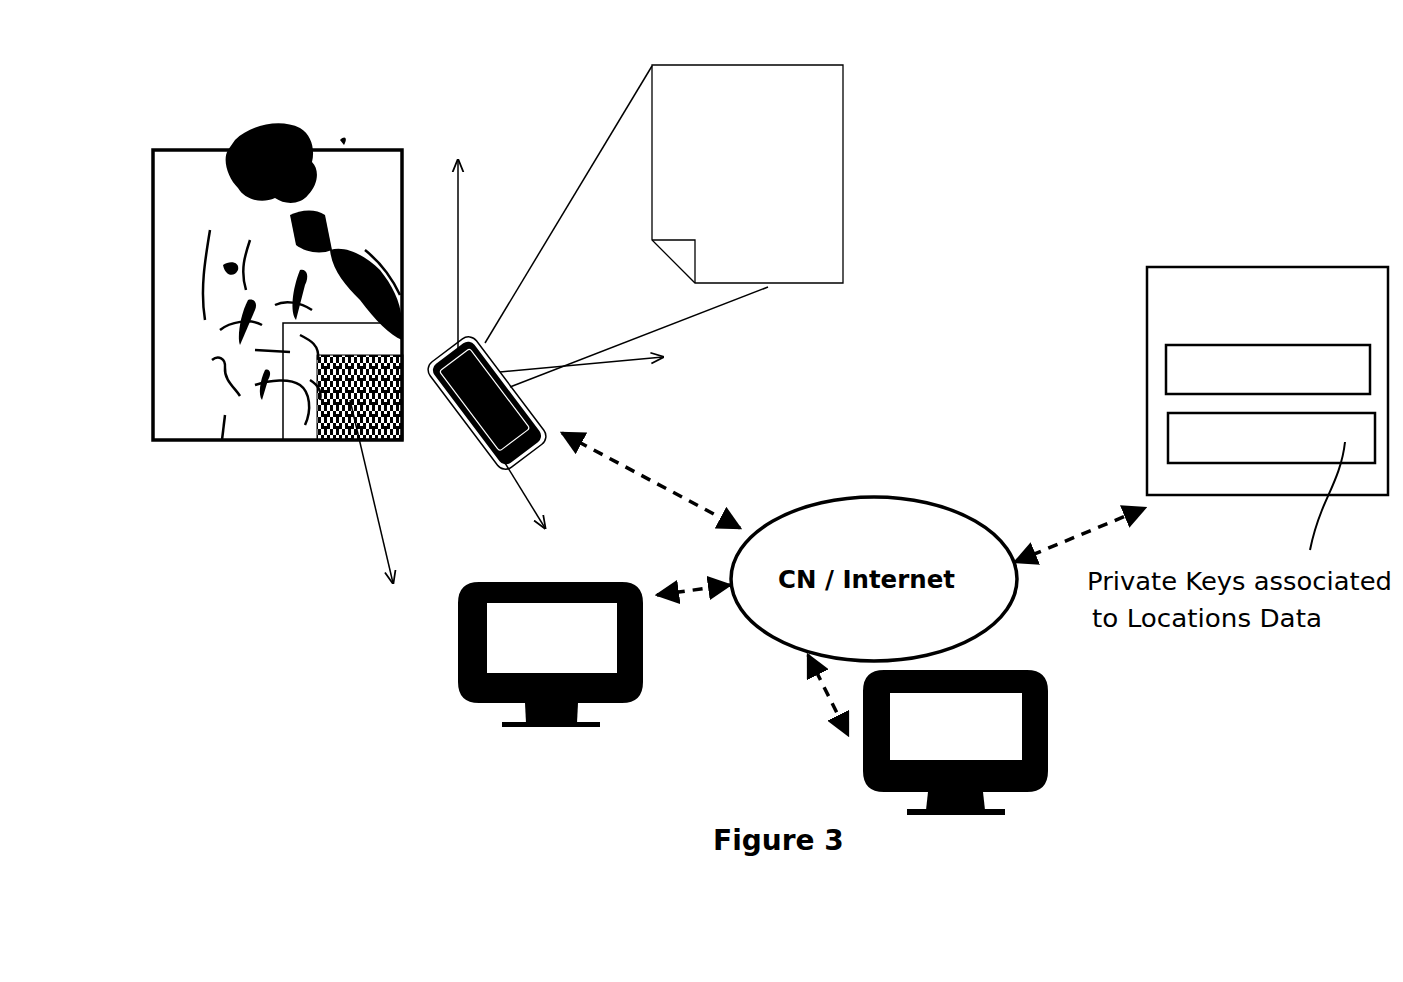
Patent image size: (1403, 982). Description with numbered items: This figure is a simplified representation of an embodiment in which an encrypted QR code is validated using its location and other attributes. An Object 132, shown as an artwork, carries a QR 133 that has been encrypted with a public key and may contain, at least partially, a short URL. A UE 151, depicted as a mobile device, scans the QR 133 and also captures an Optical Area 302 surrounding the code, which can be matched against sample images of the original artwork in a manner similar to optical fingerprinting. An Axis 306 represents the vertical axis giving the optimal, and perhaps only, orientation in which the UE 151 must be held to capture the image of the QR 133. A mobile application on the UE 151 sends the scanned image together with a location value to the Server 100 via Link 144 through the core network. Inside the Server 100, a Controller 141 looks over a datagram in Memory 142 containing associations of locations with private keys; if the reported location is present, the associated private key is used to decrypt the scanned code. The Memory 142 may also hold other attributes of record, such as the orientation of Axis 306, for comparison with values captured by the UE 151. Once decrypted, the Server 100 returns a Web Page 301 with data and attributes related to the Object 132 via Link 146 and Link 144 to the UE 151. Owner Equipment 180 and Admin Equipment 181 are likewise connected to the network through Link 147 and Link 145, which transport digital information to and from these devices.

The Server 100 is at (1200, 270).
The Object 132 is at (348, 150).
The QR 133 is at (338, 440).
The Controller 141 is at (1166, 364).
The Memory 142 is at (1168, 437).
The Link 144 is at (645, 465).
The Link 145 is at (840, 715).
The Link 146 is at (1037, 540).
The Link 147 is at (667, 587).
The UE 151 is at (482, 462).
The Owner Equipment 180 is at (645, 648).
The Admin Equipment 181 is at (1060, 727).
The Web Page 301 is at (762, 71).
The Optical Area 302 is at (283, 430).
The Axis 306 is at (382, 532).